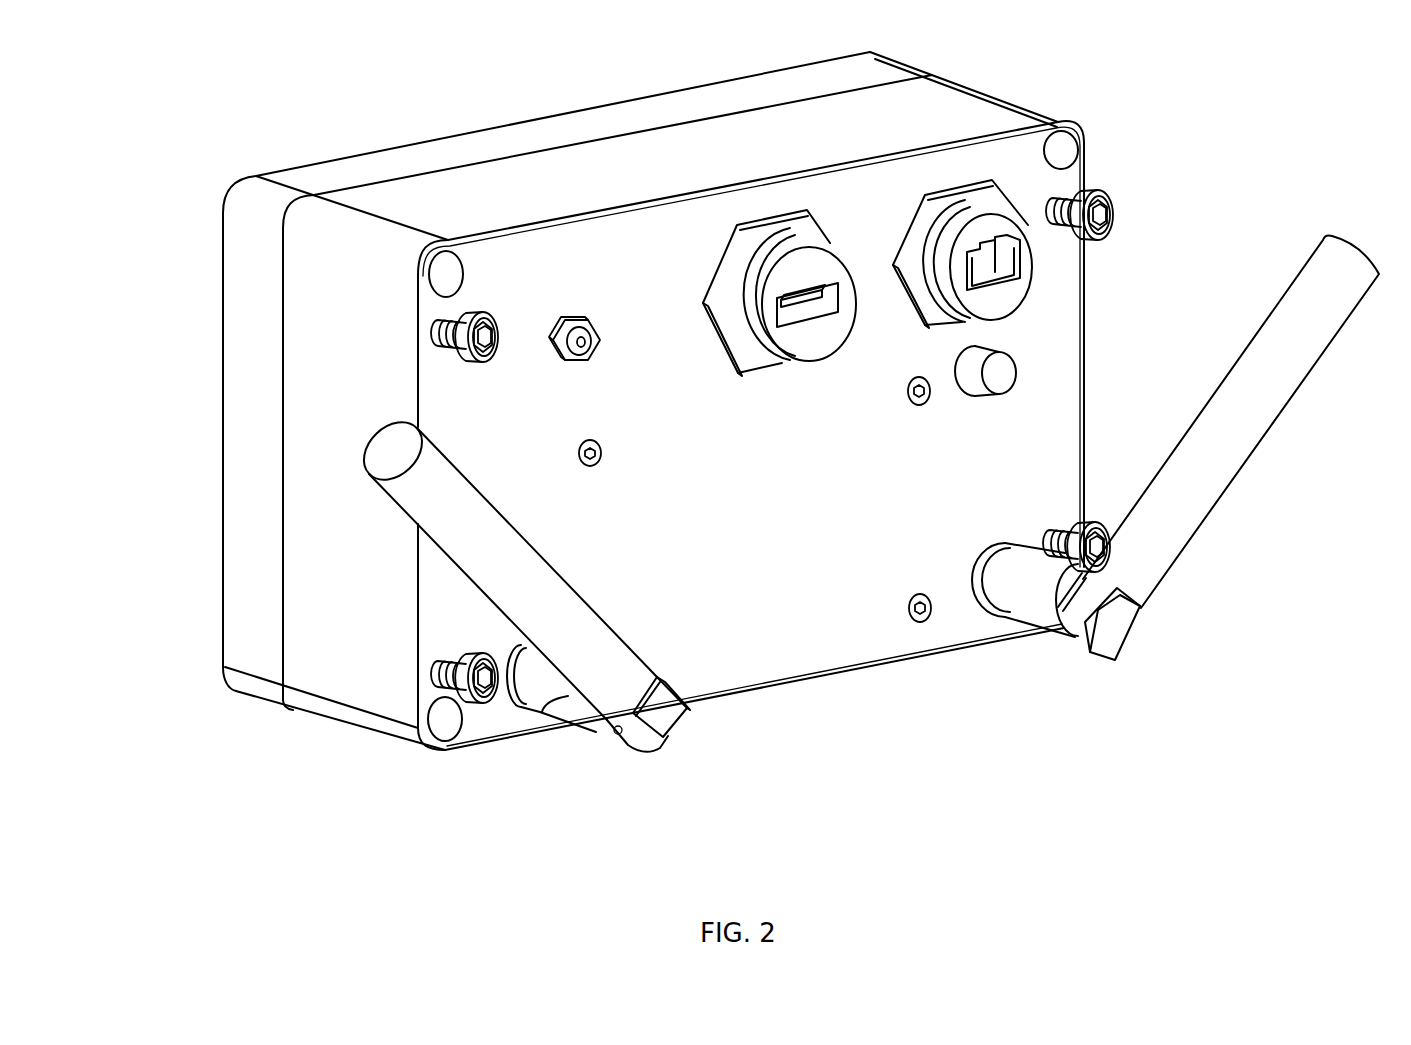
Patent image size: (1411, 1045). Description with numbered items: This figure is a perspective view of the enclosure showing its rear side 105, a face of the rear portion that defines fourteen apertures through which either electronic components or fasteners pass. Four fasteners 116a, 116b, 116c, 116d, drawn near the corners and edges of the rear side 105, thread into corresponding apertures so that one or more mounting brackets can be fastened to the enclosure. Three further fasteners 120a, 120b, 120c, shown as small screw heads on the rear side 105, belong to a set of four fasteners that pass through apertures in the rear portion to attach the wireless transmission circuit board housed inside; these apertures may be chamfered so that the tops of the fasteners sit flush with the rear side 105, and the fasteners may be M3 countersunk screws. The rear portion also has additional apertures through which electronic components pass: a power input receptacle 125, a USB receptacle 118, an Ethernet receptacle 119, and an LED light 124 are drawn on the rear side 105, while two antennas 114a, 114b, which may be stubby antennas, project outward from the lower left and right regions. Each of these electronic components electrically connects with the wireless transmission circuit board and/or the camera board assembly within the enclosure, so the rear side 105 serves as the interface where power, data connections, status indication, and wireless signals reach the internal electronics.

The rear side 105 is at (1065, 422).
The antenna 114a is at (567, 698).
The antenna 114b is at (1043, 602).
The fastener 116a is at (452, 335).
The fastener 116b is at (1097, 195).
The fastener 116c is at (1090, 533).
The fastener 116d is at (436, 680).
The USB receptacle 118 is at (767, 217).
The Ethernet receptacle 119 is at (960, 188).
The fastener 120a is at (601, 457).
The fastener 120b is at (907, 396).
The fastener 120c is at (918, 623).
The LED light 124 is at (1025, 385).
The power input receptacle 125 is at (567, 318).